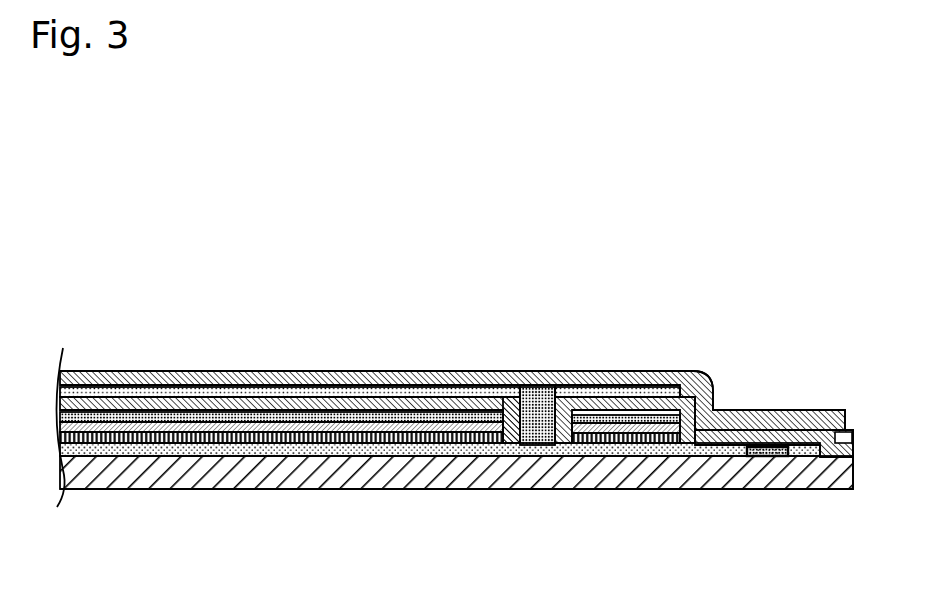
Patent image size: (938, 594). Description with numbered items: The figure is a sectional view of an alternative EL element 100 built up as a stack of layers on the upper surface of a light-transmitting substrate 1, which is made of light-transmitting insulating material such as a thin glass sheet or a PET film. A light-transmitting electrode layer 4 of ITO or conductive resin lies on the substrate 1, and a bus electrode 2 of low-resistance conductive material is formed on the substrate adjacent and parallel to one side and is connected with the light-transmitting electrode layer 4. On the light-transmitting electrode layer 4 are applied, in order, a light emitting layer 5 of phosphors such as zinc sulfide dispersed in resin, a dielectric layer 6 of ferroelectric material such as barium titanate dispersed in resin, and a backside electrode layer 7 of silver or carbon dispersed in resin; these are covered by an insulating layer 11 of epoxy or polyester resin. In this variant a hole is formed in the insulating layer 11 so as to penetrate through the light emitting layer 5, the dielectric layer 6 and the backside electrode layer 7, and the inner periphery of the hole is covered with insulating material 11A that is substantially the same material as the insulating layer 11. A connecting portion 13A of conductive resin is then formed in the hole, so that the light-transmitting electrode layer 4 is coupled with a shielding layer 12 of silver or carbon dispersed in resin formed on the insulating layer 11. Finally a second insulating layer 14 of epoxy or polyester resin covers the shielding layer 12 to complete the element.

The thin film transistor substrate 100 is at (460, 253).
The light-transmitting substrate 1 is at (645, 470).
The bus electrode 2 is at (773, 455).
The light-transmitting electrode layer 4 is at (460, 448).
The light emitting layer 5 is at (318, 425).
The dielectric layer 6 is at (168, 424).
The backside electrode layer 7 is at (590, 388).
The insulating layer 11 is at (371, 398).
The contact portion of source electrode 11A is at (502, 388).
The shielding layer 12 is at (260, 387).
The connecting portion 13A is at (540, 430).
The second insulating layer 14 is at (157, 371).